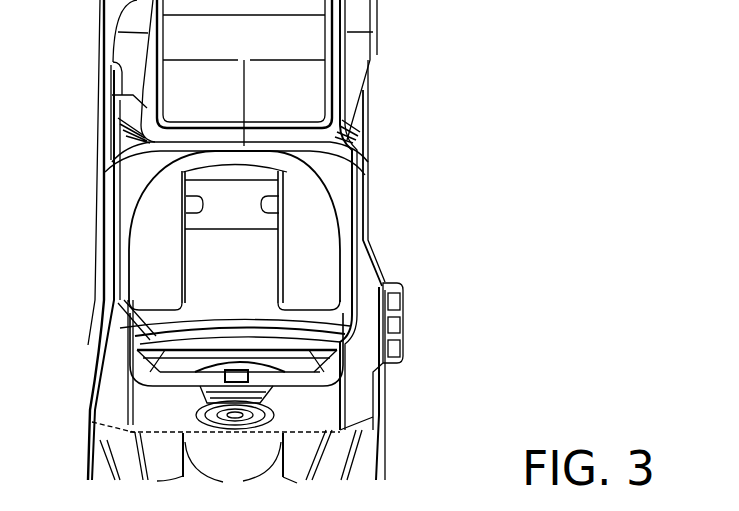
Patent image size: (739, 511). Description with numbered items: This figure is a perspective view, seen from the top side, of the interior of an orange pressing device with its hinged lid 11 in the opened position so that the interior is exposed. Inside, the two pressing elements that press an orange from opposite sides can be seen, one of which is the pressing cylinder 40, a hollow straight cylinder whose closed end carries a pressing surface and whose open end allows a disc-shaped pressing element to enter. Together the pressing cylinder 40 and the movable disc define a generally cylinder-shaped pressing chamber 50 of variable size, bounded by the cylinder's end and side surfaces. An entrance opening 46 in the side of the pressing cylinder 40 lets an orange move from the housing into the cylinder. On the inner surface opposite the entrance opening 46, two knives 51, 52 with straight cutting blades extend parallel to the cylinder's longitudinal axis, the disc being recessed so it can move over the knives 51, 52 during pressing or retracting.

The lid 11 is at (358, 44).
The pressing cylinder 40 is at (332, 162).
The entrance opening 46 is at (298, 281).
The pressing chamber 50 is at (222, 279).
The knife 51 is at (187, 230).
The knife 52 is at (286, 234).